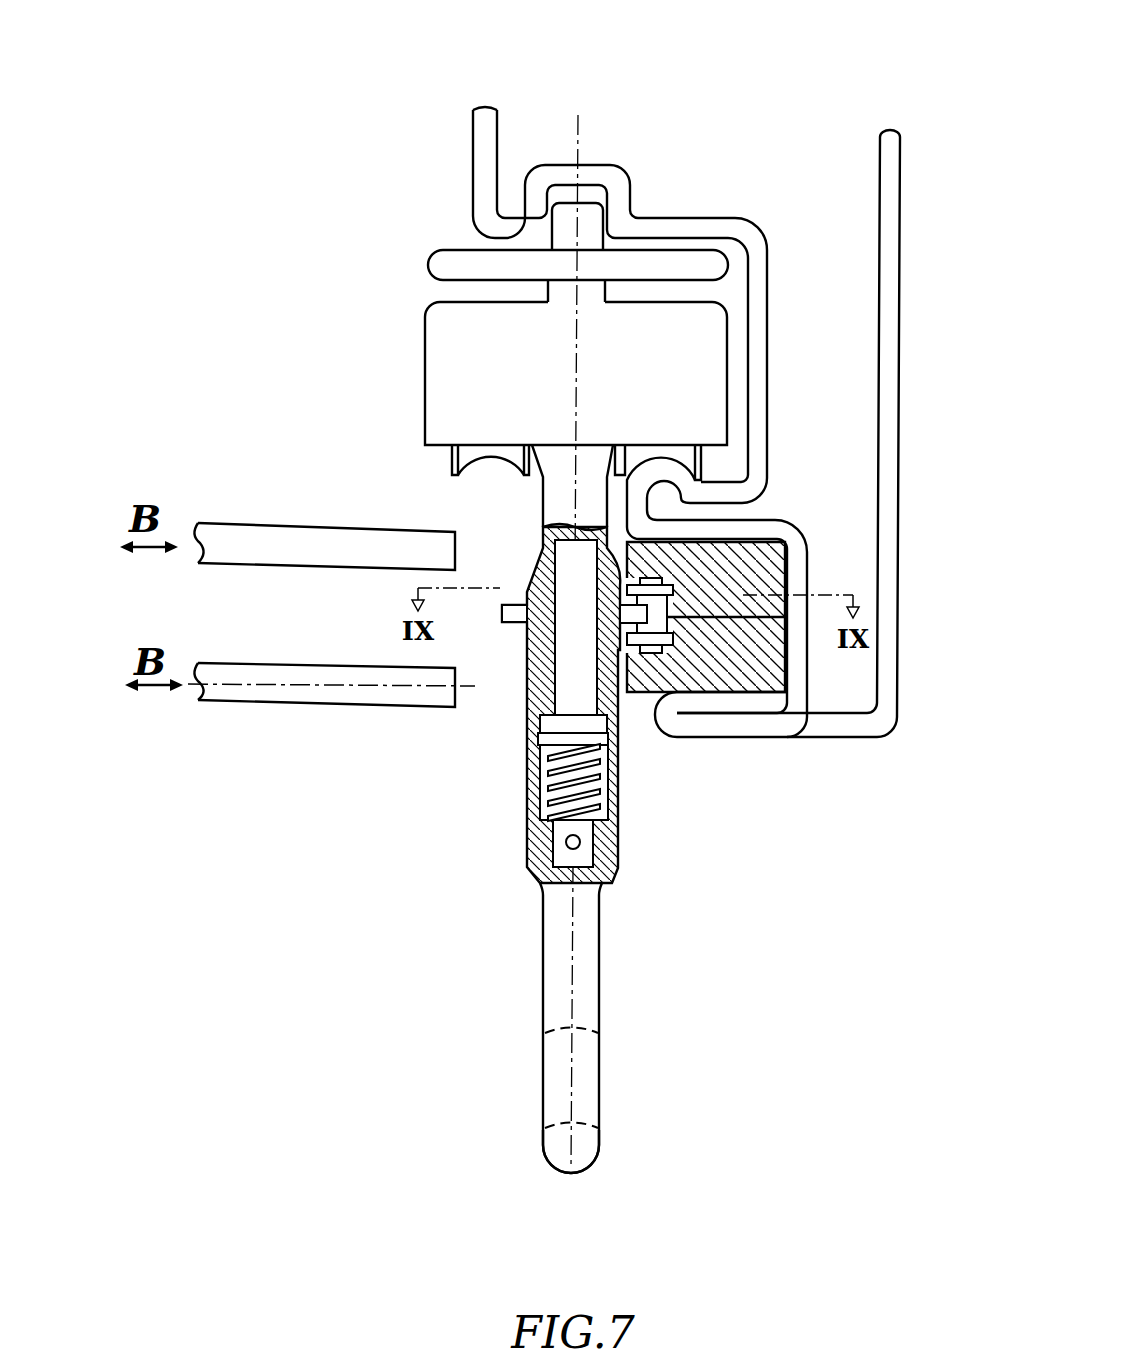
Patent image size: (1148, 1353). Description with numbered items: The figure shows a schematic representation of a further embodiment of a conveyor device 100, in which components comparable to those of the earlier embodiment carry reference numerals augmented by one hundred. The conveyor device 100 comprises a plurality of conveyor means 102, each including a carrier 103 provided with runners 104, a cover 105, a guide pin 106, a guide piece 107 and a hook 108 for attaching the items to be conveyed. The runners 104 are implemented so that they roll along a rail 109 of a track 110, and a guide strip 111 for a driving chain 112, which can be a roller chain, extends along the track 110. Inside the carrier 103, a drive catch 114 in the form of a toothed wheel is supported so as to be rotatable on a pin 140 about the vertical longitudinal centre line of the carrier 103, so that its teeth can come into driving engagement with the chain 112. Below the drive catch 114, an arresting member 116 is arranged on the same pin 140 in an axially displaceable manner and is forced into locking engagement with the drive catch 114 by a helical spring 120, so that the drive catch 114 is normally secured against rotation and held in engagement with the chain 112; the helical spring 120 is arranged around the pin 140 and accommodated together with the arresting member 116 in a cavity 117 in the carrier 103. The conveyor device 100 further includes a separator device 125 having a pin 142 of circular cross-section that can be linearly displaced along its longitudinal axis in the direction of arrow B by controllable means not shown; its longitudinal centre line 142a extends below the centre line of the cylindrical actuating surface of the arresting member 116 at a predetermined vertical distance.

The conveyor device 100 is at (373, 150).
The conveyor means 102 is at (725, 911).
The carrier 103 is at (588, 988).
The runners 104 is at (445, 452).
The cover 105 is at (455, 352).
The guide pin 106 is at (590, 228).
The guide piece 107 is at (435, 262).
The hook 108 is at (588, 1102).
The rail 109 is at (682, 482).
The track 110 is at (765, 745).
The guide strip 111 is at (757, 655).
The driving chain 112 is at (655, 648).
The drive catch 114 is at (507, 622).
The arresting member 116 is at (540, 733).
The cavity 117 is at (603, 818).
The helical spring 120 is at (527, 815).
The separator device 125 is at (200, 712).
The pin 140 is at (550, 740).
The pin 142 is at (357, 697).
The longitudinal centre line 142a is at (273, 682).